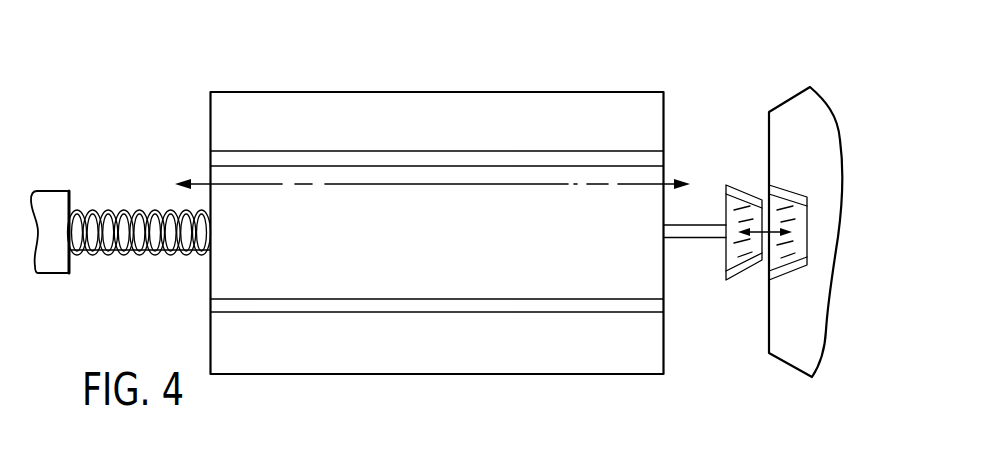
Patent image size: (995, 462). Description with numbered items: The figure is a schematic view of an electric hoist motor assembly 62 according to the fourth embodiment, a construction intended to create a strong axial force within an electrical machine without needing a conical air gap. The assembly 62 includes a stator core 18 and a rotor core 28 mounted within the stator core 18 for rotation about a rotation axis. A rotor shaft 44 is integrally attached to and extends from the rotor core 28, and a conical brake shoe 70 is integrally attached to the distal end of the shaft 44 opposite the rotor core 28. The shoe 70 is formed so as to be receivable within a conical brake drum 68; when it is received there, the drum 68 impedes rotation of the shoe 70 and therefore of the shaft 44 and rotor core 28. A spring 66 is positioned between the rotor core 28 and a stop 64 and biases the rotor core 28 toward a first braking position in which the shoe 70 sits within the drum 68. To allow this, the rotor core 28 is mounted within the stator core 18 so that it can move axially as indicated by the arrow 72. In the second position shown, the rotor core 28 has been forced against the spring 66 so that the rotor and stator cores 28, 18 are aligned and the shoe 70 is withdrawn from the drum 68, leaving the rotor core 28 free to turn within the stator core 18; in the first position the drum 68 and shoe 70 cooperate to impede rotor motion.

The electric hoist motor assembly 62 is at (498, 58).
The stator core 18 is at (500, 362).
The rotor core 28 is at (608, 289).
The arrow 72 is at (388, 184).
The stop 64 is at (52, 273).
The spring 66 is at (183, 254).
The rotor shaft 44 is at (678, 240).
The conical brake shoe 70 is at (743, 191).
The conical brake drum 68 is at (792, 273).